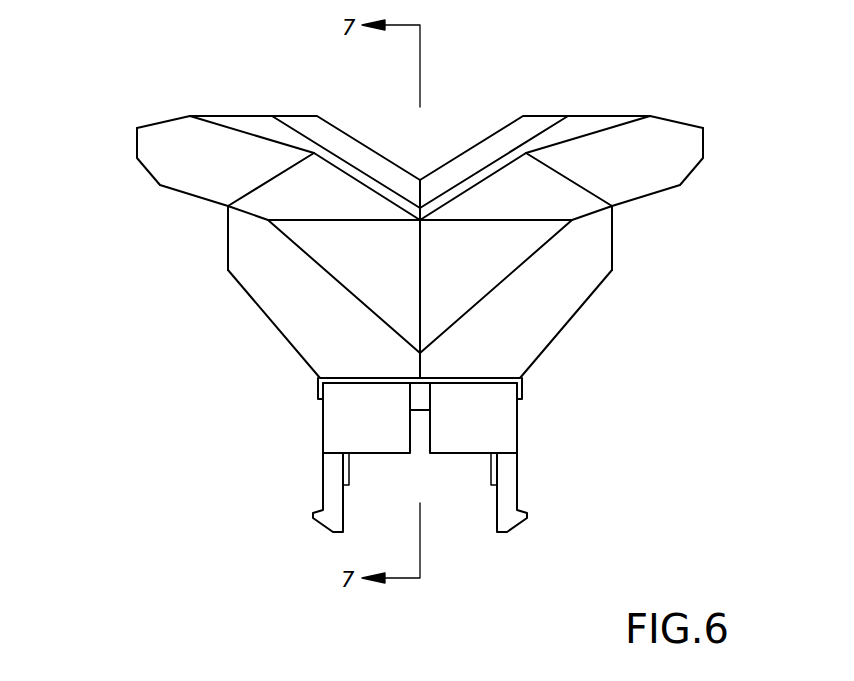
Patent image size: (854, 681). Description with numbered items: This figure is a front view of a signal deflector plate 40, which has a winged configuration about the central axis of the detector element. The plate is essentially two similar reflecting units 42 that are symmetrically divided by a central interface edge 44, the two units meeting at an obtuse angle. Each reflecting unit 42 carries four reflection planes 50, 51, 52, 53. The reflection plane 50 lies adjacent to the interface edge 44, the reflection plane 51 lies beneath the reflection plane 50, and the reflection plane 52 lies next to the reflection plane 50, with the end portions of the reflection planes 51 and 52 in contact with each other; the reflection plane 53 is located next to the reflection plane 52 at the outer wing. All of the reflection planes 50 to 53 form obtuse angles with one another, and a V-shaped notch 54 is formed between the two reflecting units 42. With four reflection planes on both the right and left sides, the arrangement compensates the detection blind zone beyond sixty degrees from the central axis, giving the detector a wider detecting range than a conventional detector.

The signal deflector plate 40 is at (702, 45).
The reflecting unit 42 is at (222, 114).
The interface edge 44 is at (420, 280).
The reflection plane 50 is at (330, 247).
The reflection plane 51 is at (317, 349).
The reflection plane 52 is at (325, 192).
The reflection plane 53 is at (167, 157).
The V-shaped notch 54 is at (427, 165).